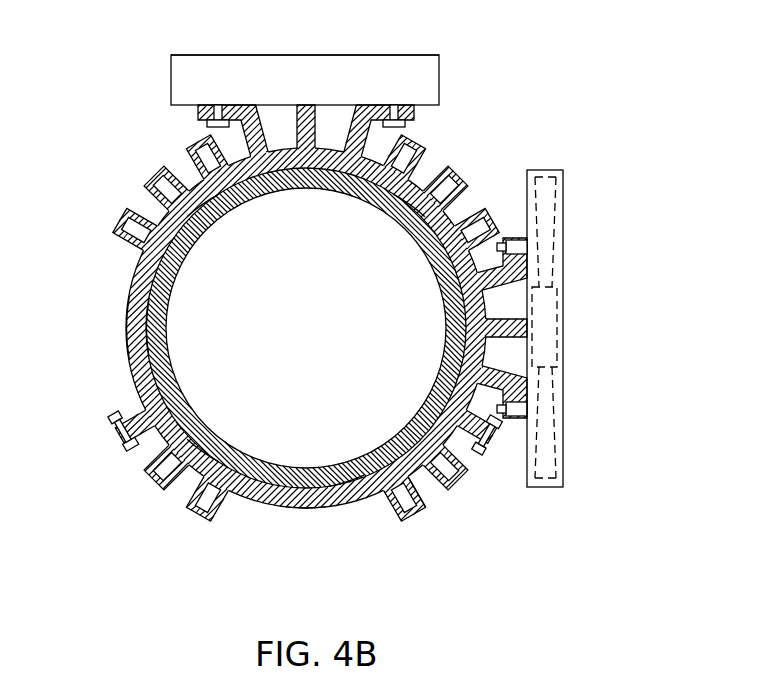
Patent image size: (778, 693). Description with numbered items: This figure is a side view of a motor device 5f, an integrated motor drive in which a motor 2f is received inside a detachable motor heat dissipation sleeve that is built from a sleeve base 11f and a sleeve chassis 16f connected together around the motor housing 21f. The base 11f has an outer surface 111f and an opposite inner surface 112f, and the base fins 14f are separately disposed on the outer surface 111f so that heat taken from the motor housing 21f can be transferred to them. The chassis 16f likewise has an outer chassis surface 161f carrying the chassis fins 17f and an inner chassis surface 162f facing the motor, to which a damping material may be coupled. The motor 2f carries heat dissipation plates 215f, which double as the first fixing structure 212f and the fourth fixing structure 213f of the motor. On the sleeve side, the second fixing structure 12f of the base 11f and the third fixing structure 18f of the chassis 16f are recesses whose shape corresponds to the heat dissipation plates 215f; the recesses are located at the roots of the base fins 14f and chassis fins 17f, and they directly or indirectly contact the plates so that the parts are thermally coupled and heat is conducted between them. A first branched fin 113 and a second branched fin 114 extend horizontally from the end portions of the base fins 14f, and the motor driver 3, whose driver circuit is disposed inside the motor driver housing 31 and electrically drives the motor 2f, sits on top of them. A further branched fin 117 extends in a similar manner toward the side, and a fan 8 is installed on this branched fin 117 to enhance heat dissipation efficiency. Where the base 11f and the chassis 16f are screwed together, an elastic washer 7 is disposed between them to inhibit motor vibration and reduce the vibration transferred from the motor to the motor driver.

The motor device 5f is at (581, 84).
The motor 2f is at (200, 372).
The motor housing 21f is at (160, 306).
The sleeve base 11f is at (143, 282).
The outer surface 111f is at (125, 308).
The inner surface 112f is at (145, 340).
The second fixing structure 12f is at (452, 187).
The base fins 14f is at (150, 204).
The sleeve chassis 16f is at (193, 473).
The chassis fins 17f is at (228, 508).
The third fixing structure 18f is at (410, 506).
The outer chassis surface 161f is at (303, 508).
The inner chassis surface 162f is at (351, 490).
The first fixing structure 212f is at (418, 218).
The fourth fixing structure 213f is at (393, 477).
The heat dissipation plates 215f is at (200, 218).
The motor driver 3 is at (215, 78).
The motor driver housing 31 is at (346, 56).
The first branched fin 113 is at (198, 112).
The second branched fin 114 is at (413, 117).
The branched fin 117 is at (520, 243).
The elastic washer 7 is at (110, 428).
The fan 8 is at (560, 201).